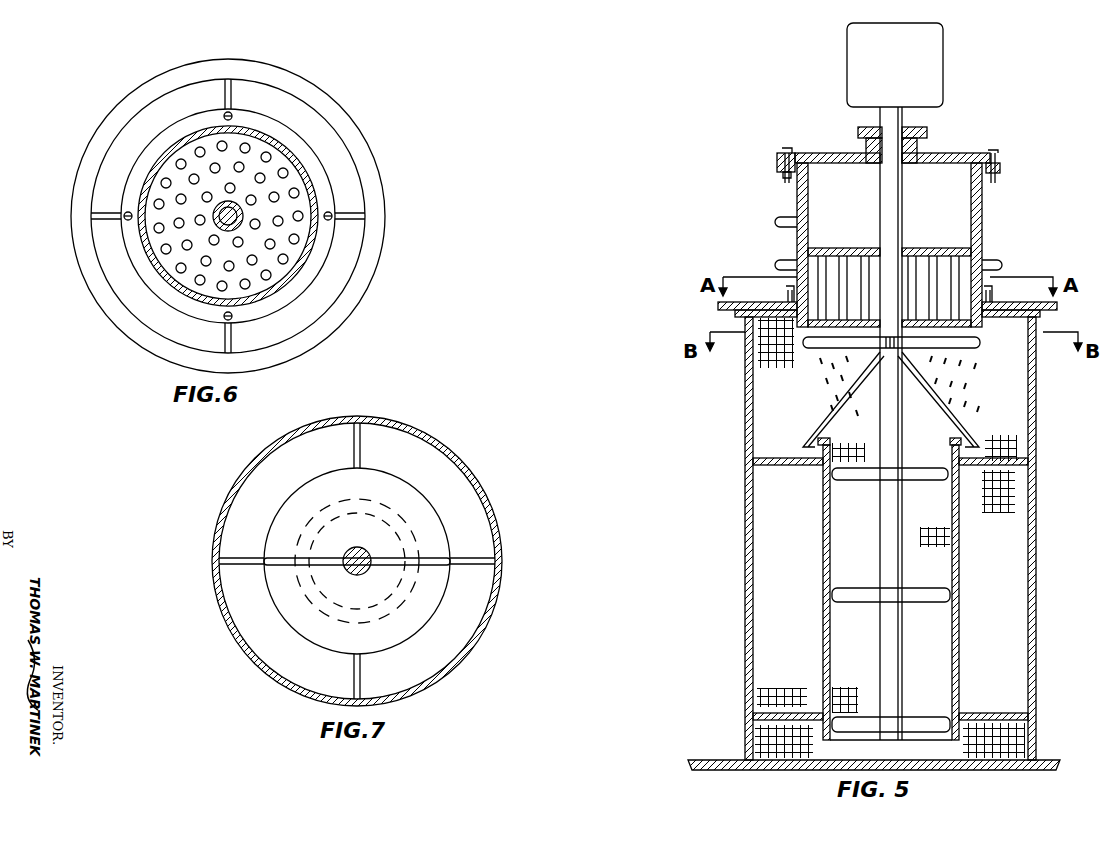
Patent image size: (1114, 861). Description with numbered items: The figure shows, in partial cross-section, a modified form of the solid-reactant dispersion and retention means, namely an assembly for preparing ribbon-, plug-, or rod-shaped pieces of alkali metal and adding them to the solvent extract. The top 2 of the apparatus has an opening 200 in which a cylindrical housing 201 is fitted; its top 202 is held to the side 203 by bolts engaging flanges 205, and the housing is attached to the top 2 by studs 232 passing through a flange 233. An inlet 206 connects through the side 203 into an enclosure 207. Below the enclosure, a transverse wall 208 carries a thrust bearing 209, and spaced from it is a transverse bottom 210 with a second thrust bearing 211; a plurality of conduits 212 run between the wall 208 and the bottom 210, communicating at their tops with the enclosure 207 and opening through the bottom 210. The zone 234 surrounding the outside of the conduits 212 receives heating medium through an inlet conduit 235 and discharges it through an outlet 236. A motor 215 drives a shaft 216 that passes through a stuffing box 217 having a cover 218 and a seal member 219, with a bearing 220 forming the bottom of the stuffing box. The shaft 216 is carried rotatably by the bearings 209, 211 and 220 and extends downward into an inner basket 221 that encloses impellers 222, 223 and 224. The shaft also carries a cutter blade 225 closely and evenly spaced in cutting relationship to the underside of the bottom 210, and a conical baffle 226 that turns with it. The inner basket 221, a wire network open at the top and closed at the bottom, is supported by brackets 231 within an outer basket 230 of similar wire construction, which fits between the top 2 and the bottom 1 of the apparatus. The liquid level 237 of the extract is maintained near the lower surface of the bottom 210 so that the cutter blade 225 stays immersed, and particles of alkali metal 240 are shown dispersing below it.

In FIG. 5, the bottom 1 is at (1045, 764).
In FIG. 5, the top 2 is at (720, 304).
In FIG. 5, the opening 200 is at (960, 326).
In FIG. 5, the cylindrical housing 201 is at (1075, 213).
In FIG. 5, the top 202 is at (1000, 151).
In FIG. 6, the side 203 is at (312, 178).
In FIG. 5, the side 203 is at (982, 200).
In FIG. 5, the flanges 205 is at (1001, 168).
In FIG. 5, the inlet 206 is at (779, 218).
In FIG. 5, the enclosure 207 is at (850, 189).
In FIG. 5, the transverse wall 208 is at (855, 250).
In FIG. 5, the thrust bearing 209 is at (906, 250).
In FIG. 5, the transverse bottom 210 is at (976, 343).
In FIG. 6, the second thrust bearing 211 is at (242, 226).
In FIG. 5, the second thrust bearing 211 is at (873, 350).
In FIG. 6, the conduits 212 is at (166, 178).
In FIG. 5, the conduits 212 is at (956, 254).
In FIG. 5, the motor 215 is at (895, 65).
In FIG. 6, the shaft 216 is at (228, 224).
In FIG. 7, the shaft 216 is at (362, 570).
In FIG. 5, the shaft 216 is at (900, 112).
In FIG. 5, the stuffing box 217 is at (917, 146).
In FIG. 5, the cover 218 is at (860, 130).
In FIG. 5, the seal member 219 is at (866, 146).
In FIG. 5, the bearing 220 is at (902, 160).
In FIG. 7, the inner basket 221 is at (388, 506).
In FIG. 5, the inner basket 221 is at (959, 656).
In FIG. 5, the impeller 222 is at (875, 480).
In FIG. 5, the impeller 223 is at (875, 602).
In FIG. 5, the impeller 224 is at (908, 718).
In FIG. 7, the cutter blade 225 is at (388, 556).
In FIG. 5, the cutter blade 225 is at (970, 350).
In FIG. 7, the conical baffle 226 is at (278, 512).
In FIG. 5, the conical baffle 226 is at (965, 436).
In FIG. 6, the outer basket 230 is at (372, 240).
In FIG. 7, the outer basket 230 is at (470, 495).
In FIG. 5, the outer basket 230 is at (1037, 378).
In FIG. 6, the brackets 231 is at (350, 211).
In FIG. 7, the brackets 231 is at (450, 565).
In FIG. 5, the brackets 231 is at (808, 462).
In FIG. 6, the studs 232 is at (232, 114).
In FIG. 5, the studs 232 is at (993, 296).
In FIG. 6, the flange 233 is at (274, 127).
In FIG. 5, the flange 233 is at (788, 296).
In FIG. 5, the zone 234 is at (972, 253).
In FIG. 5, the inlet conduit 235 is at (786, 260).
In FIG. 5, the outlet 236 is at (998, 264).
In FIG. 5, the liquid level 237 is at (876, 327).
In FIG. 5, the particles of alkali metal 240 is at (812, 410).